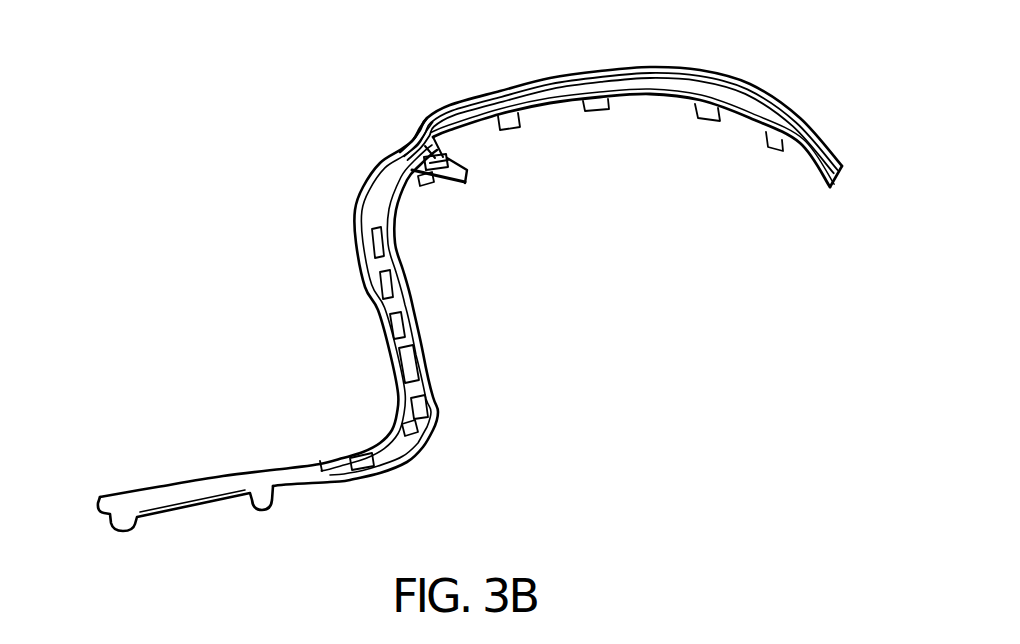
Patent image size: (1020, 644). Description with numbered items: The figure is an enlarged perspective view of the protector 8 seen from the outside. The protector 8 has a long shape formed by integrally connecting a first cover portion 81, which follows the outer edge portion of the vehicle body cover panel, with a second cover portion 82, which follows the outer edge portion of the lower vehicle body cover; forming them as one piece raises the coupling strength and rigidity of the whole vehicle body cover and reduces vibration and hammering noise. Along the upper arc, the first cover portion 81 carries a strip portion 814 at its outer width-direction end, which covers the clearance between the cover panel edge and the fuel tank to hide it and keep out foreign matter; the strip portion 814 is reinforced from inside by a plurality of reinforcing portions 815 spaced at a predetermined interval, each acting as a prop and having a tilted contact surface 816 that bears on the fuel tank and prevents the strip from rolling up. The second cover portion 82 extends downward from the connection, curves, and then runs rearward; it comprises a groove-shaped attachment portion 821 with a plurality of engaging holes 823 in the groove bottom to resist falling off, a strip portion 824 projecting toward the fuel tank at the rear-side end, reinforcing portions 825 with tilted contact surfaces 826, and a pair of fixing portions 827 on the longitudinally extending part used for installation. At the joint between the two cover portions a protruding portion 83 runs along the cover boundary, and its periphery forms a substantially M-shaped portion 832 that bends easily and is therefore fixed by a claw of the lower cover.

The protector 8 is at (278, 130).
The first cover portion 81 is at (668, 64).
The strip portion 814 is at (657, 97).
The reinforcing portion 815 is at (640, 148).
The contact surface 816 is at (587, 102).
The protruding portion 83 is at (446, 161).
The M-shaped portion 832 is at (492, 184).
The second cover portion 82 is at (284, 432).
The attachment portion 821 is at (405, 293).
The engaging hole 823 is at (430, 183).
The strip portion 824 is at (368, 262).
The reinforcing portion 825 is at (320, 307).
The contact surface 826 is at (380, 172).
The fixing portion 827 is at (242, 500).